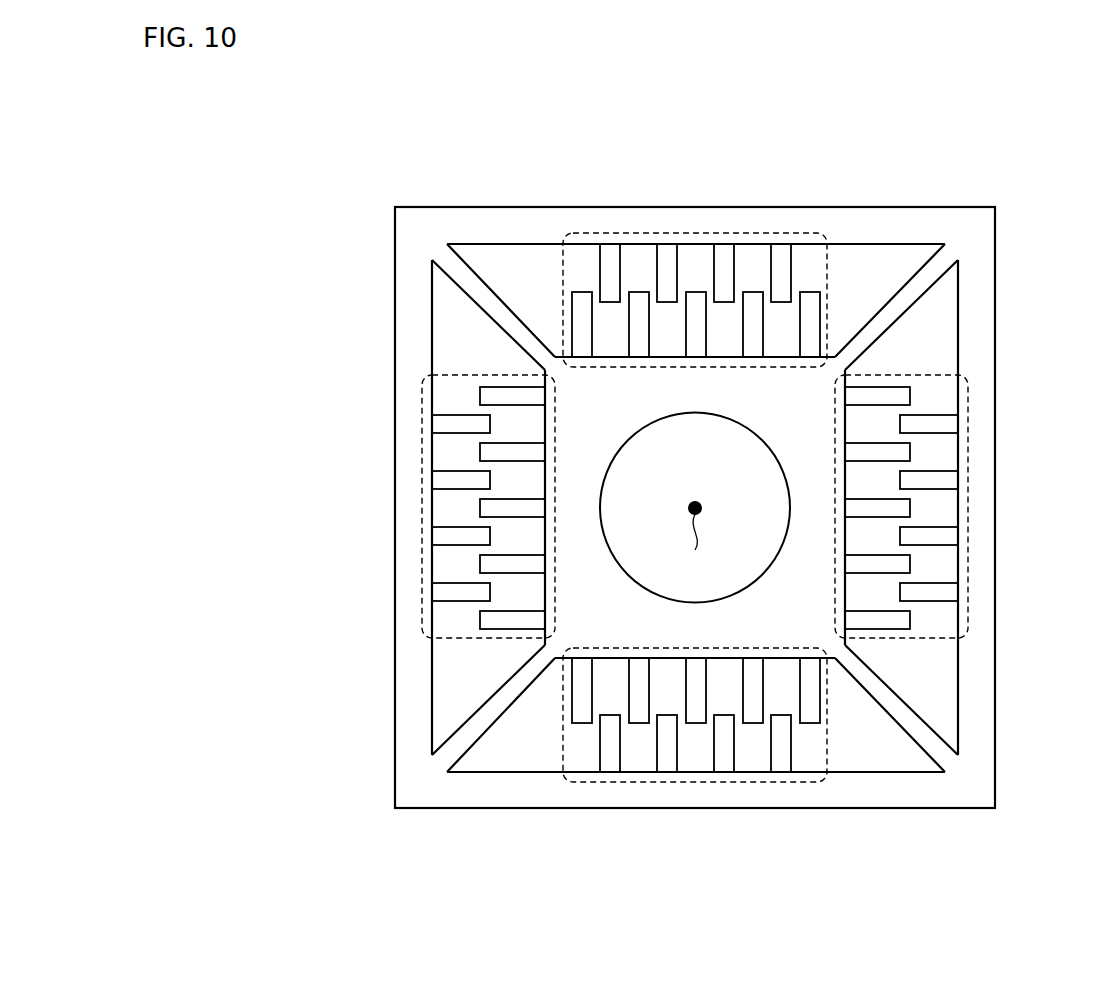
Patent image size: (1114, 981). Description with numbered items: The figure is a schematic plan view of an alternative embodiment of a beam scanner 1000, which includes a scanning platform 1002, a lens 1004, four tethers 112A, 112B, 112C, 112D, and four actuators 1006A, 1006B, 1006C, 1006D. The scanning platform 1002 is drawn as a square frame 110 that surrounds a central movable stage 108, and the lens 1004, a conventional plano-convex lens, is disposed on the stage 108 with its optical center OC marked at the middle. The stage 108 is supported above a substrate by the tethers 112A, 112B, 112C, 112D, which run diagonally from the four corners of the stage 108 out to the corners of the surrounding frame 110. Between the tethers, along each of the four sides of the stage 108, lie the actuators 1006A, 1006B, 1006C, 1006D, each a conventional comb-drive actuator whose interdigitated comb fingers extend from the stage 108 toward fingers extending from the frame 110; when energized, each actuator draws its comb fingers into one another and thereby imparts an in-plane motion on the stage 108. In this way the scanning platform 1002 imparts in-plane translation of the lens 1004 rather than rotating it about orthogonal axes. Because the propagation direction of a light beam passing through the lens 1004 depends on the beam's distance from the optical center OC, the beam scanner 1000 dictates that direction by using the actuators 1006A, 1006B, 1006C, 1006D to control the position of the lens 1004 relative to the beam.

The beam scanner 1000 is at (288, 147).
The scanning platform 1002 is at (588, 152).
The frame 110 is at (907, 227).
The movable stage 108 is at (817, 642).
The lens 1004 is at (763, 484).
The tether 112A is at (920, 733).
The tether 112B is at (875, 330).
The tether 112C is at (515, 332).
The tether 112D is at (523, 685).
The actuator 1006A is at (690, 780).
The actuator 1006B is at (968, 527).
The actuator 1006C is at (700, 237).
The actuator 1006D is at (422, 527).